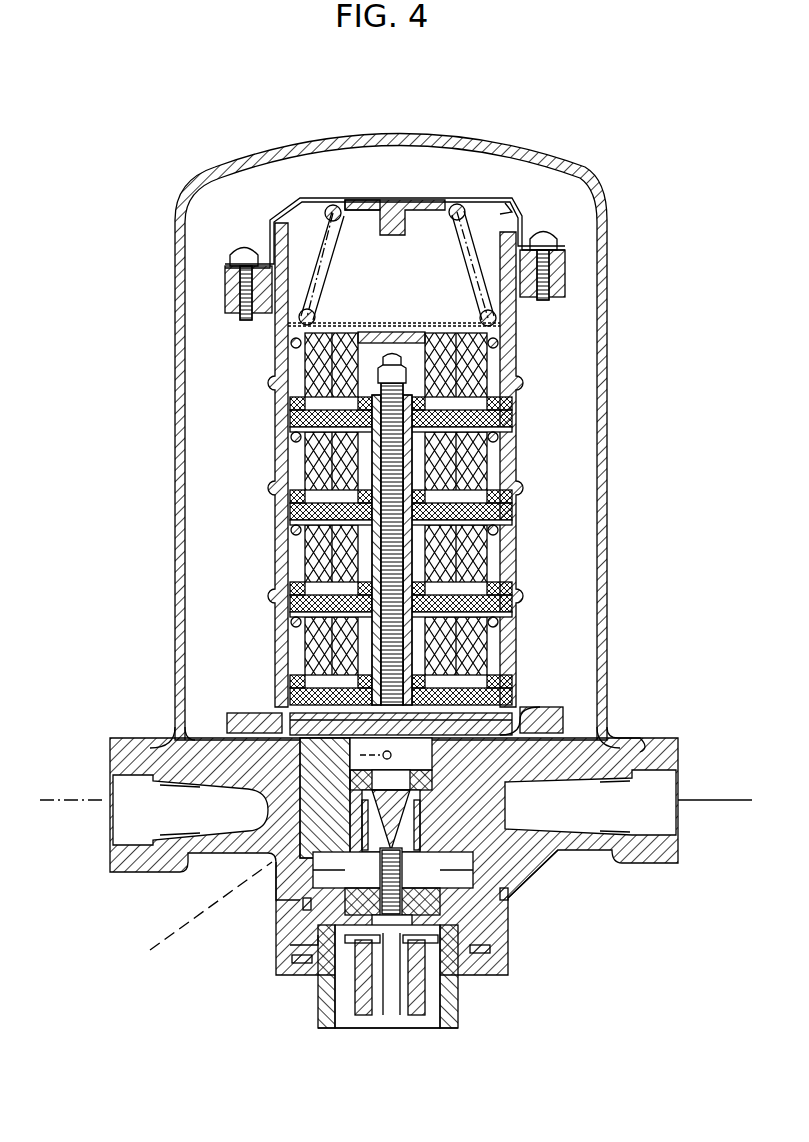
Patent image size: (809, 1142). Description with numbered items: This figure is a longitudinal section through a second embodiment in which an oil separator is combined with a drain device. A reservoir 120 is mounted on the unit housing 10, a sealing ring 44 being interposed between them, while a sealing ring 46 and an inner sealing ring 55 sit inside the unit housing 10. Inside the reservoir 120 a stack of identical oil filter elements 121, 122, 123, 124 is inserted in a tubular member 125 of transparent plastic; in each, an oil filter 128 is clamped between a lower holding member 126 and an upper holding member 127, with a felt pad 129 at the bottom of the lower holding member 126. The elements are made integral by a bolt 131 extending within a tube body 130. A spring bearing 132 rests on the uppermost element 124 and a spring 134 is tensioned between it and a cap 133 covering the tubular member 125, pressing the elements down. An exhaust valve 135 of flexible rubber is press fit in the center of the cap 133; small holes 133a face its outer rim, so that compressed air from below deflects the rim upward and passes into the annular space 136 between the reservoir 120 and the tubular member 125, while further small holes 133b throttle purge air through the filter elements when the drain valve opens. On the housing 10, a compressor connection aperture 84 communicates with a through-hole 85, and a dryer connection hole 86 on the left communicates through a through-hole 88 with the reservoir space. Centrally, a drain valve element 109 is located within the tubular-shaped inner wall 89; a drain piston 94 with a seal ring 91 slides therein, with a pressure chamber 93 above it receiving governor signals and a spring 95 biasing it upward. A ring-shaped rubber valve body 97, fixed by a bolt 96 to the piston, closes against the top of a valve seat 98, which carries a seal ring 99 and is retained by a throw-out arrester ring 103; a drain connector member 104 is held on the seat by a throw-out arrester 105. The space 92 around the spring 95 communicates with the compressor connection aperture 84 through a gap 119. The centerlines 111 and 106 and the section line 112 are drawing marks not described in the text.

The unit housing 10 is at (640, 858).
The sealing ring 44 is at (600, 737).
The sealing ring 46 is at (520, 730).
The inner sealing ring 55 is at (336, 740).
The compressor connection aperture 84 is at (682, 822).
The through-hole 85 is at (530, 870).
The dryer connection hole 86 is at (110, 825).
The through-hole 88 is at (182, 735).
The tubular-shaped inner wall 89 is at (290, 853).
The seal ring 91 is at (350, 783).
The space 92 is at (440, 806).
The pressure chamber 93 is at (425, 763).
The drain piston 94 is at (362, 812).
The spring 95 is at (420, 835).
The bolt 96 is at (360, 960).
The ring-shaped rubber valve body 97 is at (505, 925).
The valve seat 98 is at (490, 949).
The seal ring 99 is at (303, 905).
The throw-out arrester ring 103 is at (292, 958).
The drain connector member 104 is at (442, 1000).
The throw-out arrester 105 is at (290, 945).
The outlet axis 106 is at (712, 800).
The drain valve element 109 is at (345, 1000).
The inlet axis 111 is at (70, 797).
The section line 112 is at (148, 950).
The gap 119 is at (508, 892).
The reservoir 120 is at (608, 408).
The oil filter element 121 is at (318, 650).
The oil filter element 122 is at (318, 553).
The oil filter element 123 is at (290, 486).
The oil filter element 124 is at (290, 402).
The tubular member 125 is at (514, 504).
The lower holding member 126 is at (300, 583).
The upper holding member 127 is at (503, 556).
The oil filter 128 is at (490, 612).
The felt pad 129 is at (505, 662).
The tube body 130 is at (503, 414).
The bolt 131 is at (400, 457).
The spring bearing 132 is at (492, 322).
The cap 133 is at (485, 200).
The small holes 133a is at (362, 205).
The small holes 133b is at (300, 198).
The spring 134 is at (470, 208).
The exhaust valve 135 is at (388, 200).
The annular space 136 is at (246, 362).